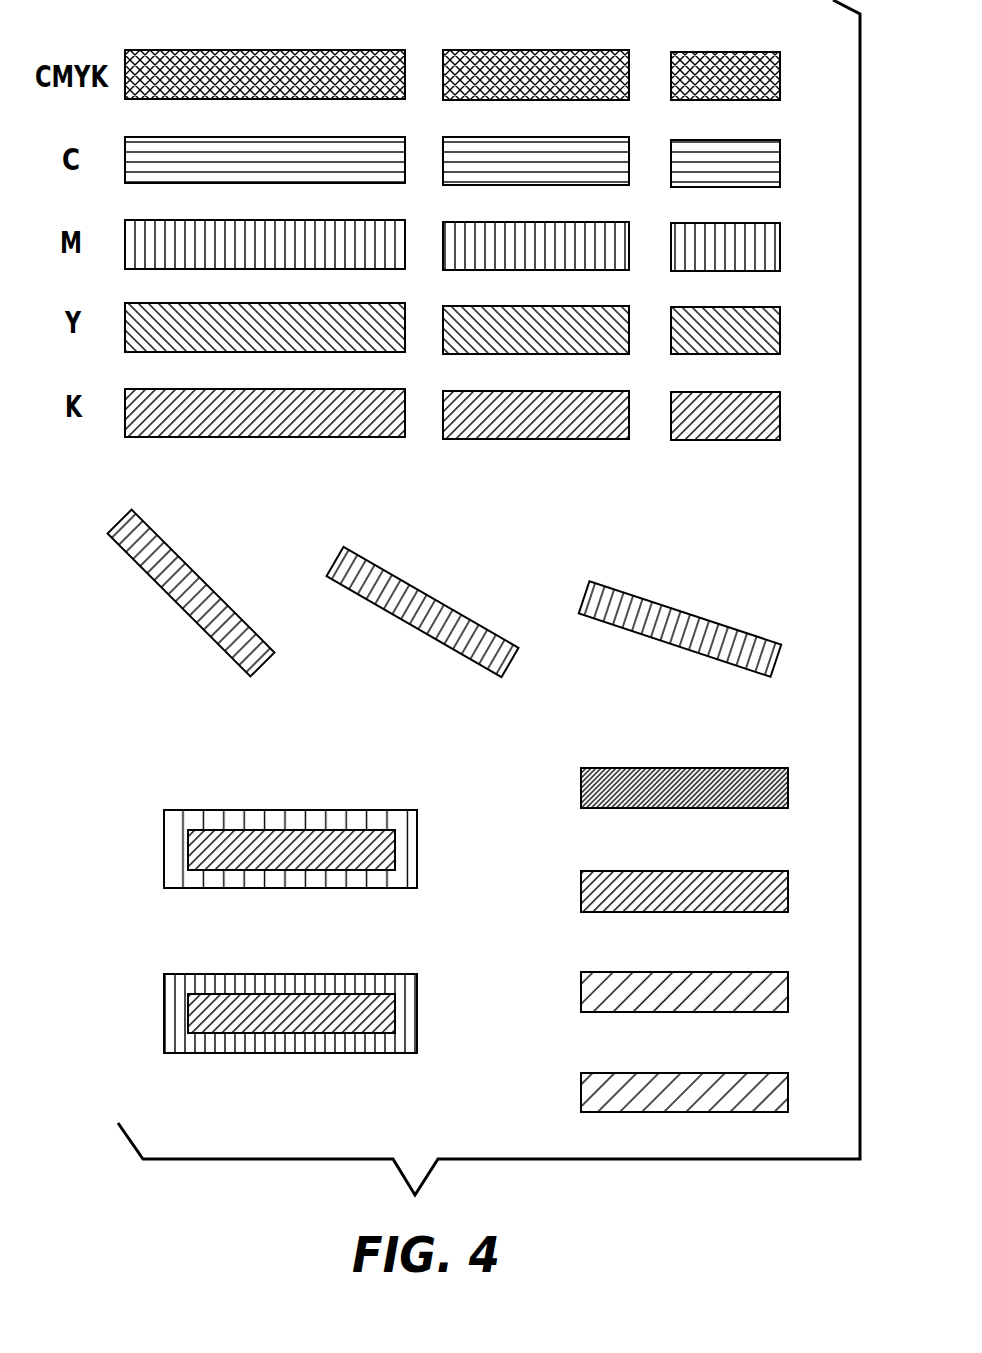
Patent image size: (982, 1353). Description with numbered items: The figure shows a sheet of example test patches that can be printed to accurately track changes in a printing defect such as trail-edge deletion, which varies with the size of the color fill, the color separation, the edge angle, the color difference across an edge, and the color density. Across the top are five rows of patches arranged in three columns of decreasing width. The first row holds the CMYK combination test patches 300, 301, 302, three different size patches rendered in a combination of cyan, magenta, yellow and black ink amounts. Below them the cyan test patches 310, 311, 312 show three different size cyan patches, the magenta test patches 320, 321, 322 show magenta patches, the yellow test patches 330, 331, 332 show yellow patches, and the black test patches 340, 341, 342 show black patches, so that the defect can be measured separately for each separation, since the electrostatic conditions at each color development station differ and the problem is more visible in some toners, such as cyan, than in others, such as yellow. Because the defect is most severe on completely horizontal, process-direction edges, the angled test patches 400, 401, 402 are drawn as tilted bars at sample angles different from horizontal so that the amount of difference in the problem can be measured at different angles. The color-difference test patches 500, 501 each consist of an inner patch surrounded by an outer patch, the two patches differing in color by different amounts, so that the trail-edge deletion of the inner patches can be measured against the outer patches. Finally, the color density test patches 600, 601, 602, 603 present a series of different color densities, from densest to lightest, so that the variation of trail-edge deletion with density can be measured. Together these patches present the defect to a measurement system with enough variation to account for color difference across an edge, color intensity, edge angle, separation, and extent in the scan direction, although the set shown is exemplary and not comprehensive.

The CMYK combination test patch 300 is at (360, 50).
The CMYK combination test patch 301 is at (585, 50).
The CMYK combination test patch 302 is at (728, 52).
The cyan test patch 310 is at (338, 148).
The cyan test patch 311 is at (563, 152).
The cyan test patch 312 is at (729, 150).
The magenta test patch 320 is at (323, 237).
The magenta test patch 321 is at (548, 237).
The magenta test patch 322 is at (725, 235).
The yellow test patch 330 is at (330, 318).
The yellow test patch 331 is at (543, 320).
The yellow test patch 332 is at (731, 317).
The black test patch 340 is at (330, 401).
The black test patch 341 is at (547, 402).
The black test patch 342 is at (728, 402).
The angled test patch 400 is at (188, 568).
The angled test patch 401 is at (433, 608).
The angled test patch 402 is at (670, 613).
The color-difference test patch 500 is at (337, 820).
The color-difference test patch 501 is at (328, 988).
The color density test patch 600 is at (722, 770).
The color density test patch 601 is at (700, 875).
The color density test patch 602 is at (723, 977).
The color density test patch 603 is at (719, 1077).